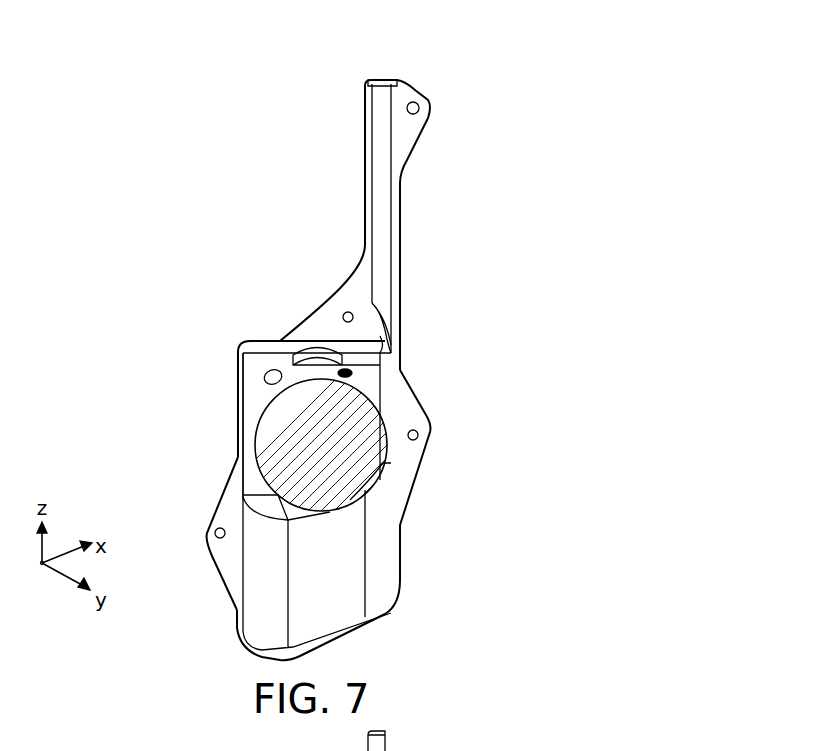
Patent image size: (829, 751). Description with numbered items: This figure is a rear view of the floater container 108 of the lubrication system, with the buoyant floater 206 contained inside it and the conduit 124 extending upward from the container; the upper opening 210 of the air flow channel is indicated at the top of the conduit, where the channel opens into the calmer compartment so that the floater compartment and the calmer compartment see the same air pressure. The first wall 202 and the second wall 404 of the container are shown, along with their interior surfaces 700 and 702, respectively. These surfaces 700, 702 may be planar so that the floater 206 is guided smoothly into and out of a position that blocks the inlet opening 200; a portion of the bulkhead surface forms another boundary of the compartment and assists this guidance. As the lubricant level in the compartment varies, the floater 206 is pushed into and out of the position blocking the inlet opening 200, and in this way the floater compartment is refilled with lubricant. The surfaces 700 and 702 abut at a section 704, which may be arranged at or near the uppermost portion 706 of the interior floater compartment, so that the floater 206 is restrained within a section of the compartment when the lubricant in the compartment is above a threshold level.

The floater container 108 is at (228, 180).
The conduit 124 is at (340, 182).
The upper opening 210 is at (380, 82).
The inlet opening 200 is at (268, 372).
The first wall 202 is at (255, 370).
The section 704 is at (317, 348).
The second wall 404 is at (386, 357).
The uppermost portion 706 is at (350, 372).
The interior surface 702 is at (344, 378).
The interior surface 700 is at (257, 410).
The buoyant floater 206 is at (272, 450).